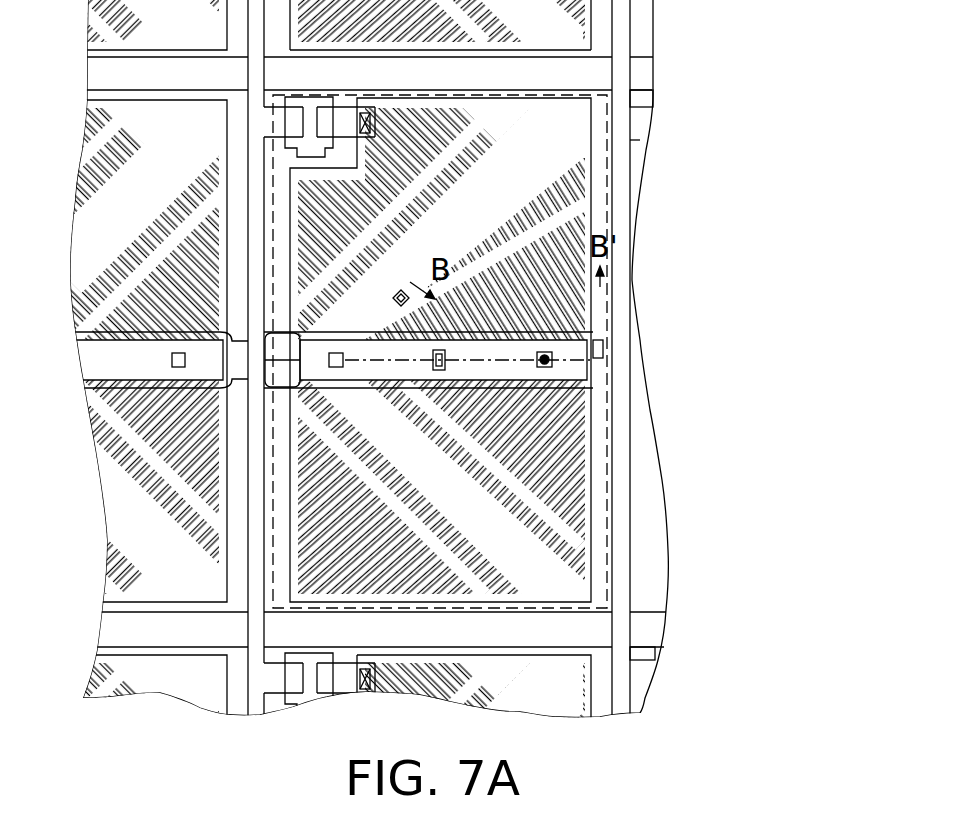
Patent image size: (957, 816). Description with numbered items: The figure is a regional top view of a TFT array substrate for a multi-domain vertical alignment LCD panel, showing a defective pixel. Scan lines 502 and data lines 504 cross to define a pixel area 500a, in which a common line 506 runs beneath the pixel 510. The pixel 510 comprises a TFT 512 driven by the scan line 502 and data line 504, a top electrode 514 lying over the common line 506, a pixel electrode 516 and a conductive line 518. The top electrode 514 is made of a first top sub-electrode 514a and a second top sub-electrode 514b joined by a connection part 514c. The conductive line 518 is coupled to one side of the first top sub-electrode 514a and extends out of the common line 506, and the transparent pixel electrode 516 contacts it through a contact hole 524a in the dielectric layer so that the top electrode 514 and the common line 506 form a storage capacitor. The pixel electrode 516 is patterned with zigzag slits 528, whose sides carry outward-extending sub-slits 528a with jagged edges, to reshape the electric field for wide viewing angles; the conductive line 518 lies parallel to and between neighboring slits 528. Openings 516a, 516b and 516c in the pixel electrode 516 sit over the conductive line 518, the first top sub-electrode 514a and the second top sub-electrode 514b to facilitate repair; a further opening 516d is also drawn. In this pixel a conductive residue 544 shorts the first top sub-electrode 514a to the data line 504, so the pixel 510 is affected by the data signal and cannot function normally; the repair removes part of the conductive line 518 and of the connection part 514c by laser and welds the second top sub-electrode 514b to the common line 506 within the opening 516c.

The pixel area 500a is at (658, 80).
The scan line 502 is at (655, 628).
The data line 504 is at (630, 702).
The common line 506 is at (640, 358).
The pixel 510 is at (793, 100).
The TFT 512 is at (333, 141).
The top electrode 514 is at (716, 255).
The first top sub-electrode 514a is at (470, 338).
The second top sub-electrode 514b is at (605, 345).
The connection part 514c is at (446, 356).
The pixel electrode 516 is at (500, 225).
The opening 516a is at (440, 420).
The opening 516b is at (480, 480).
The opening 516c is at (343, 362).
The contact window 516d is at (550, 368).
The conductive line 518 is at (470, 290).
The contact hole 524a is at (404, 290).
The slit 528 is at (574, 517).
The sub-slit 528a is at (564, 534).
The conductive residue 544 is at (520, 505).